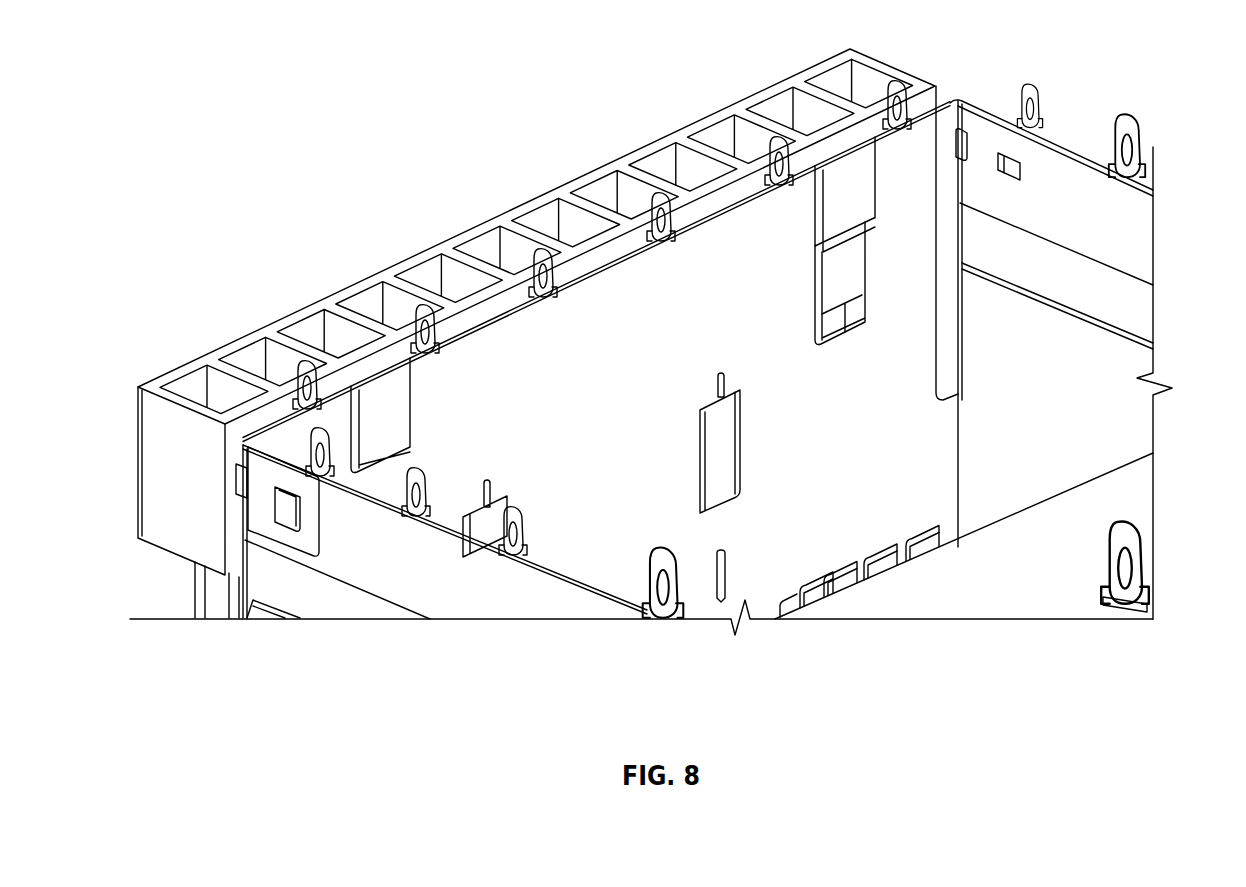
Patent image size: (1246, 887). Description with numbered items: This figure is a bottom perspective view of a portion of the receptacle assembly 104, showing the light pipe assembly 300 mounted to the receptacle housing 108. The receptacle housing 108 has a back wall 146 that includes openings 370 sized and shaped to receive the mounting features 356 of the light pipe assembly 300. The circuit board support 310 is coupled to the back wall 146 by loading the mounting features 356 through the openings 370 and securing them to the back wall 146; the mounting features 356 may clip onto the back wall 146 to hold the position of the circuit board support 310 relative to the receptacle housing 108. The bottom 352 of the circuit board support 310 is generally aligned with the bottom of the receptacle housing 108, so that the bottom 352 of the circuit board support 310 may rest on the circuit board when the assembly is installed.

The receptacle assembly 104 is at (681, 340).
The receptacle housing 108 is at (1103, 210).
The back wall 146 is at (593, 332).
The light pipe assembly 300 is at (541, 316).
The circuit board support 310 is at (163, 495).
The bottom 352 is at (199, 360).
The mounting features 356 is at (375, 403).
The openings 370 is at (850, 273).